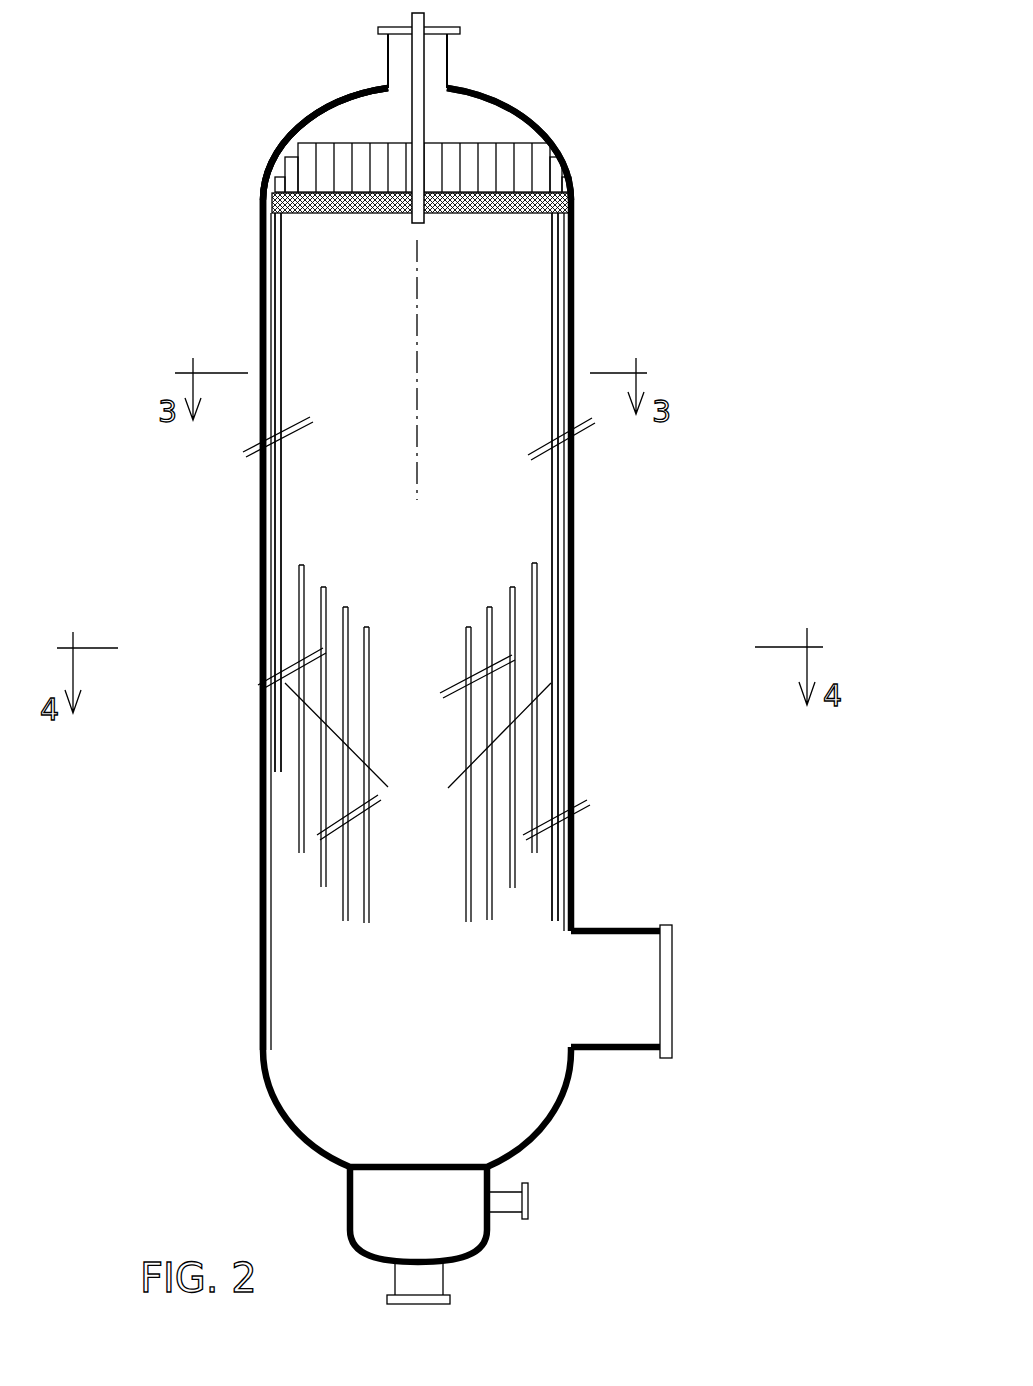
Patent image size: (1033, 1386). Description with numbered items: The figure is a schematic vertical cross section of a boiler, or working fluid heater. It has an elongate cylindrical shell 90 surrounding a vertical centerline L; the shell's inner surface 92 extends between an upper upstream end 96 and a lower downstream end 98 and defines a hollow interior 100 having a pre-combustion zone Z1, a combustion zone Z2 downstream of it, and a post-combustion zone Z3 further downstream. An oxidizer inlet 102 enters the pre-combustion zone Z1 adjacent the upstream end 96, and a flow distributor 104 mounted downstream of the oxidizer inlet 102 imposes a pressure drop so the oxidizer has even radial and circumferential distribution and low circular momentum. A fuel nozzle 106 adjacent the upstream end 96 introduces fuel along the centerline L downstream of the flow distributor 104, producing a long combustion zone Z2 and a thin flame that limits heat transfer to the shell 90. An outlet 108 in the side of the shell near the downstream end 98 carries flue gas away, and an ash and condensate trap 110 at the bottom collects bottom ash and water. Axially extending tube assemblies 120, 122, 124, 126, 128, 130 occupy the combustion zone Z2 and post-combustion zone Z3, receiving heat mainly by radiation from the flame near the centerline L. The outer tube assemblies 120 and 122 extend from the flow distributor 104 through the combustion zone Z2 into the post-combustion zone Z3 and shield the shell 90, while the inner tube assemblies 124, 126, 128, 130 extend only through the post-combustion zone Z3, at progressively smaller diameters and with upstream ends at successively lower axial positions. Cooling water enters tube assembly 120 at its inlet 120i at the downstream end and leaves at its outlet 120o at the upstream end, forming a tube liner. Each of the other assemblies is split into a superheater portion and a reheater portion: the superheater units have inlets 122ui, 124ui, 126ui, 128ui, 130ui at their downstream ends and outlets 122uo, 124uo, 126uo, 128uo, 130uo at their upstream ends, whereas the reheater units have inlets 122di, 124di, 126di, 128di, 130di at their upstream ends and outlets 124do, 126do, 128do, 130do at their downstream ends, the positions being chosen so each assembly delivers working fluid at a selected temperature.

The elongate cylindrical shell 90 is at (574, 249).
The inner surface 92 is at (574, 268).
The upper upstream end 96 is at (478, 97).
The lower downstream end 98 is at (492, 1170).
The hollow interior 100 is at (444, 1072).
The oxidizer inlet 102 is at (427, 30).
The flow distributor 104 is at (472, 215).
The fuel nozzle 106 is at (410, 226).
The outlet 108 is at (672, 1018).
The ash and condensate trap 110 is at (438, 1226).
The tube assembly 120 is at (556, 333).
The tube assembly 122 is at (552, 363).
The tube assembly 124 is at (540, 572).
The tube assembly 126 is at (516, 615).
The tube assembly 128 is at (493, 680).
The tube assembly 130 is at (472, 725).
The outlet 120o is at (650, 218).
The inlet 120i is at (258, 1043).
The outlet 122uo is at (263, 187).
The inlet 122ui is at (275, 492).
The inlet 122di is at (275, 505).
The inlet 124ui is at (299, 569).
The inlet 126ui is at (321, 595).
The inlet 128ui is at (343, 613).
The inlet 130ui is at (364, 630).
The outlet 124uo is at (299, 693).
The outlet 126uo is at (321, 713).
The outlet 128uo is at (343, 738).
The outlet 130uo is at (364, 755).
The inlet 124di is at (537, 710).
The inlet 126di is at (515, 732).
The inlet 128di is at (492, 753).
The inlet 130di is at (471, 773).
The outlet 124do is at (537, 850).
The outlet 126do is at (515, 879).
The outlet 128do is at (492, 912).
The outlet 130do is at (471, 922).
The vertical centerline L is at (417, 440).
The pre-combustion zone Z1 is at (807, 214).
The combustion zone Z2 is at (795, 214).
The post-combustion zone Z3 is at (813, 564).